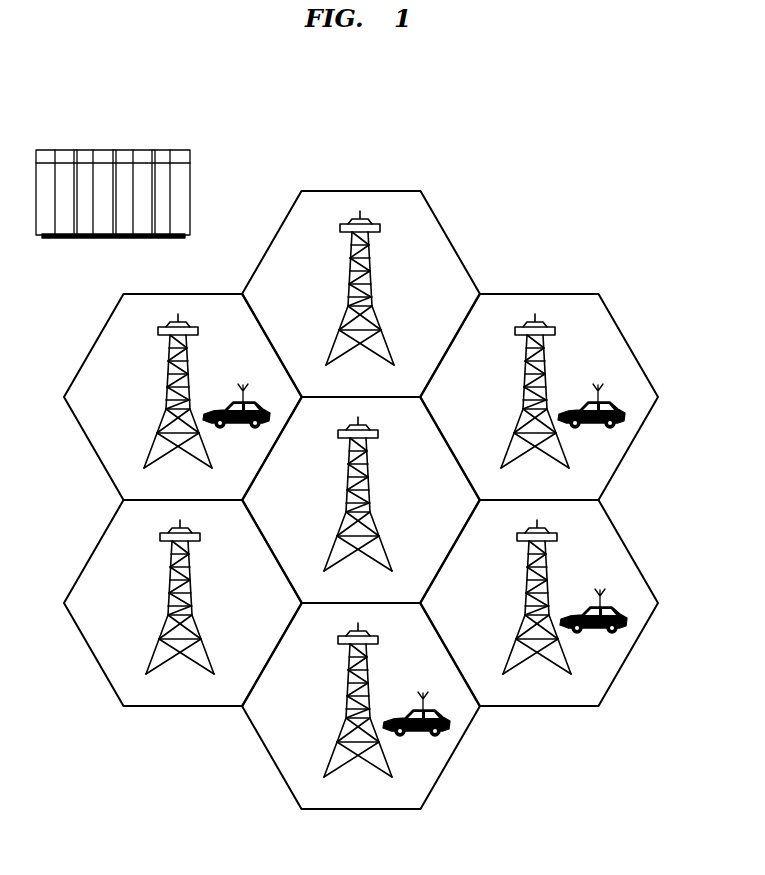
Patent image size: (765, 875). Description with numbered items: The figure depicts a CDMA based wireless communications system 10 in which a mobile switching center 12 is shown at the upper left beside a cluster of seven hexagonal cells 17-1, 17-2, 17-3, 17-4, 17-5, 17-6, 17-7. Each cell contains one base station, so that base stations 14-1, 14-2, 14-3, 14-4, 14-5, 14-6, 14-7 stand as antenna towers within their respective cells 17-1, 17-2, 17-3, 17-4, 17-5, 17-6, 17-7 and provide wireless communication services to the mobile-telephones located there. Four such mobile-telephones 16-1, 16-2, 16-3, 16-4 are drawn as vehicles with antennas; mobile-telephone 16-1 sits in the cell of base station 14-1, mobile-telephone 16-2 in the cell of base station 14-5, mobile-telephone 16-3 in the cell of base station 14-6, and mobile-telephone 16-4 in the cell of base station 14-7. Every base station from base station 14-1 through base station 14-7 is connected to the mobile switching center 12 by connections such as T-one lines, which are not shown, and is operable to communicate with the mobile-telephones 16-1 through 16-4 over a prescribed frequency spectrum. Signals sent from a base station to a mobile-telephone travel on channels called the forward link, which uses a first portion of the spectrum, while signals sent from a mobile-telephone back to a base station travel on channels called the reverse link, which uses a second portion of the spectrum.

The wireless communications system 10 is at (378, 91).
The mobile switching center 12 is at (112, 150).
The base station 14-1 is at (168, 398).
The base station 14-2 is at (168, 603).
The base station 14-3 is at (350, 293).
The base station 14-4 is at (348, 500).
The base station 14-5 is at (348, 697).
The base station 14-6 is at (523, 400).
The base station 14-7 is at (525, 603).
The mobile-telephone 16-1 is at (226, 400).
The mobile-telephone 16-2 is at (404, 712).
The mobile-telephone 16-3 is at (579, 402).
The mobile-telephone 16-4 is at (579, 608).
The cell 17-1 is at (83, 438).
The cell 17-2 is at (100, 665).
The cell 17-3 is at (452, 247).
The cell 17-4 is at (298, 567).
The cell 17-5 is at (290, 790).
The cell 17-6 is at (633, 350).
The cell 17-7 is at (633, 553).